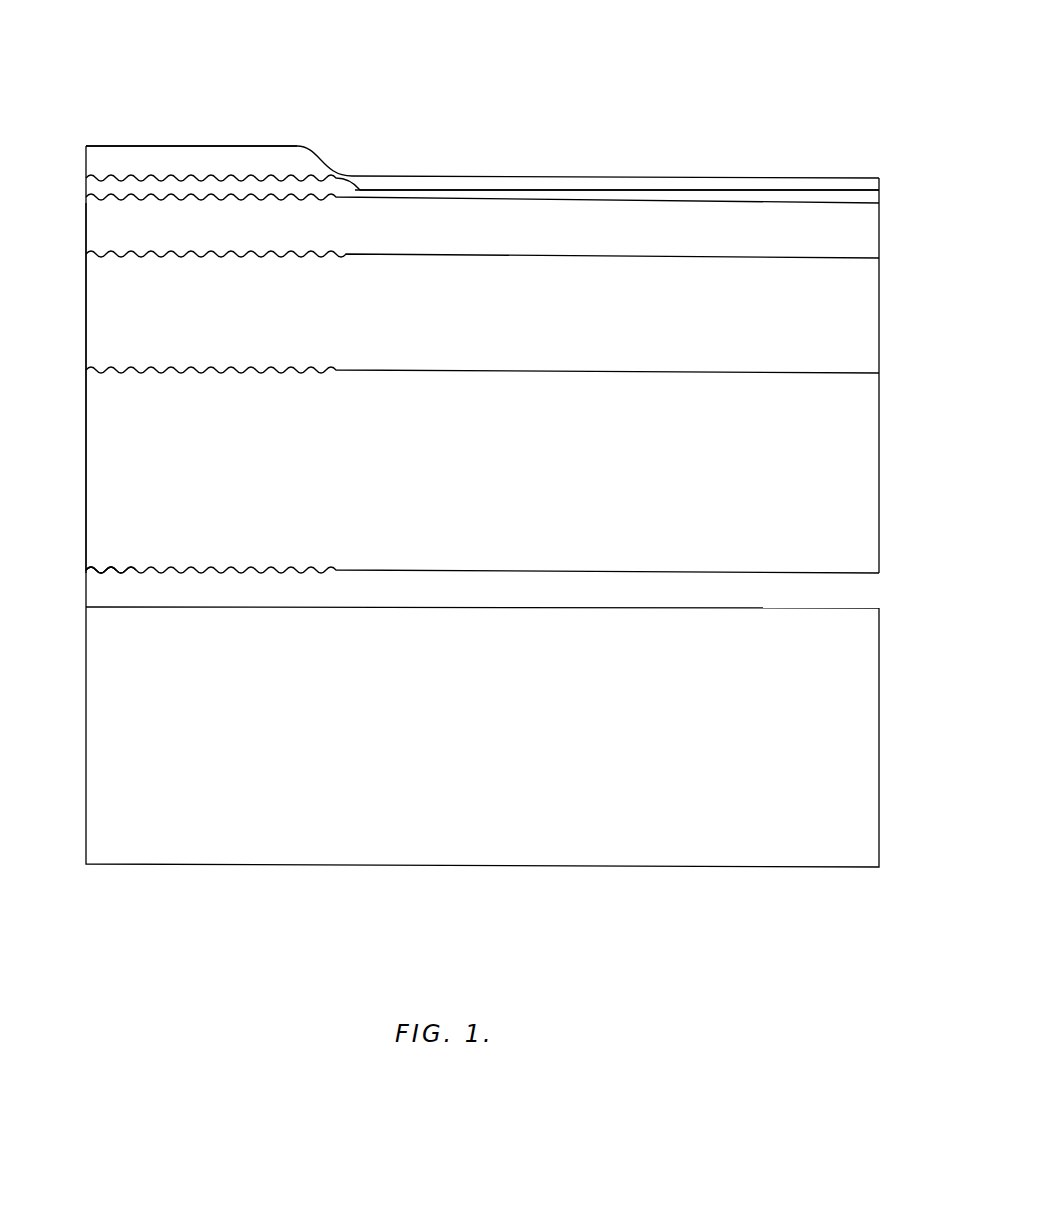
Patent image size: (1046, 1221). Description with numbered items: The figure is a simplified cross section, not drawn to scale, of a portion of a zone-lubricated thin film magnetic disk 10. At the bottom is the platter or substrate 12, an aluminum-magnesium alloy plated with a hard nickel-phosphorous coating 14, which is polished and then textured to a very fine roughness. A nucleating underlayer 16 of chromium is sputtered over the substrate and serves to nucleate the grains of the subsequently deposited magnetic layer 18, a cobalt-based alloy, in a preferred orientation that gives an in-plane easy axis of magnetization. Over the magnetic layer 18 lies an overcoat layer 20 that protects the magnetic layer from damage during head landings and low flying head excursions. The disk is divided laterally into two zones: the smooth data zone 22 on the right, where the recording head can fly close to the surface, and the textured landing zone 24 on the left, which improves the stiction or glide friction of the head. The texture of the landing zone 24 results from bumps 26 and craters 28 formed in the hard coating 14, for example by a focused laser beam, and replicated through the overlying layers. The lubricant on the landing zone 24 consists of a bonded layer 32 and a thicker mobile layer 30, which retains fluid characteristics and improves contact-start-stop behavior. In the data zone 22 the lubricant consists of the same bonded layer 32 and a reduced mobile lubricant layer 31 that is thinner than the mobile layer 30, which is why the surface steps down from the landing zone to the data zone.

The zone-lubricated thin film magnetic disk 10 is at (703, 46).
The substrate 12 is at (880, 727).
The nickel-phosphorous coating 14 is at (880, 597).
The nucleating underlayer 16 is at (880, 473).
The magnetic layer 18 is at (880, 323).
The overcoat layer 20 is at (880, 230).
The data zone 22 is at (756, 167).
The landing zone 24 is at (188, 120).
The bumps 26 is at (134, 566).
The craters 28 is at (121, 566).
The mobile layer 30 is at (86, 158).
The mobile lubricant layer 31 is at (880, 183).
The bonded layer 32 is at (86, 186).